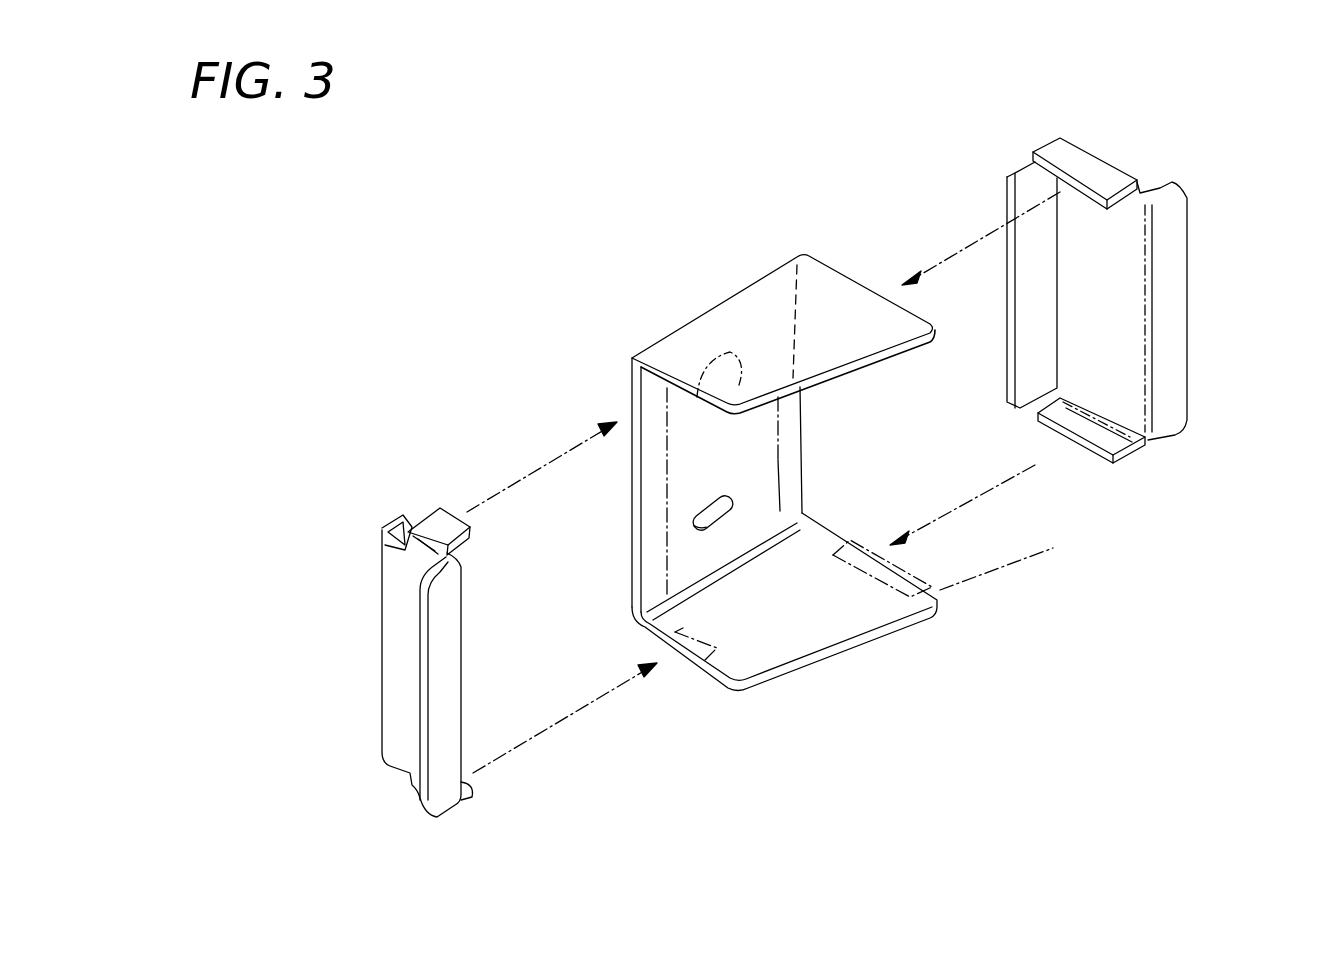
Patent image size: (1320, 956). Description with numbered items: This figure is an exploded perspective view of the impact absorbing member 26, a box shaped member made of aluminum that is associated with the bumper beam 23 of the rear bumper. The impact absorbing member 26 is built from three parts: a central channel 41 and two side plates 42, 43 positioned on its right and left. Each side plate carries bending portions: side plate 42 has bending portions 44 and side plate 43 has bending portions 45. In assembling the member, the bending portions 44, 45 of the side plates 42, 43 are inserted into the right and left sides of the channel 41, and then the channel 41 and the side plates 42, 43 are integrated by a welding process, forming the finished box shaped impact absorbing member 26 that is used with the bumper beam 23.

The impact absorbing member 26 is at (694, 214).
The channel 41 is at (833, 662).
The bumper beam 23 is at (940, 590).
The side plate 42 is at (1190, 458).
The bending portions 44 is at (1015, 165).
The side plate 43 is at (478, 822).
The bending portions 45 is at (432, 510).